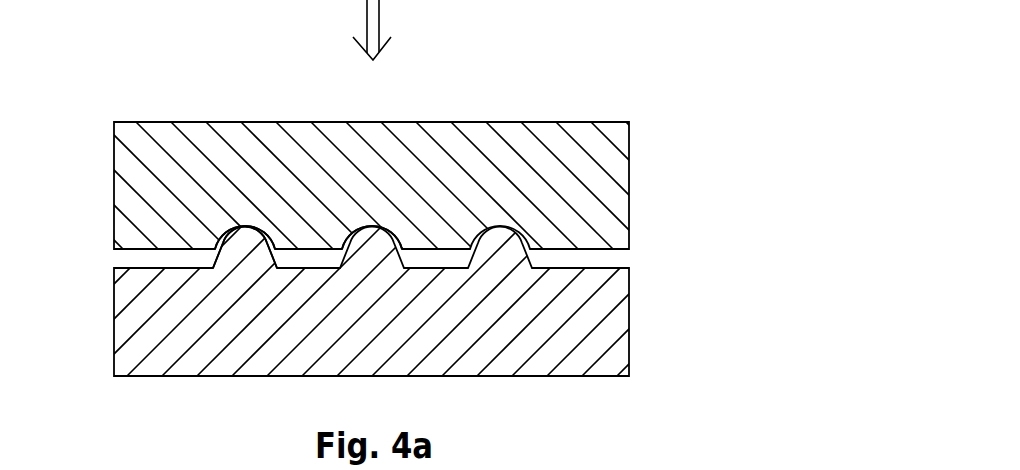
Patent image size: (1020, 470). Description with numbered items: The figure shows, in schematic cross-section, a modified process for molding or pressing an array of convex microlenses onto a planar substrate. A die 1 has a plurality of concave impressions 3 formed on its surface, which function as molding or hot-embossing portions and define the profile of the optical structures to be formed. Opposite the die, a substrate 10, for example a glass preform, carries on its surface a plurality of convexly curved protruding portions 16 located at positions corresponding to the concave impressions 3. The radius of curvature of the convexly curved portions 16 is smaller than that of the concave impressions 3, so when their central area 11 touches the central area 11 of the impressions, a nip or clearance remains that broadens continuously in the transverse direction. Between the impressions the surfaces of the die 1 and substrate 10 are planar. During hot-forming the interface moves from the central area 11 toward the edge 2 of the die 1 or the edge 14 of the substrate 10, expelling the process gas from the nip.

The die 1 is at (618, 138).
The edge of the die 2 is at (136, 249).
The concave impressions 3 is at (268, 230).
The substrate 10 is at (618, 354).
The central area 11 is at (245, 227).
The edge of the substrate 14 is at (137, 268).
The convexly curved protruding portions 16 is at (395, 232).